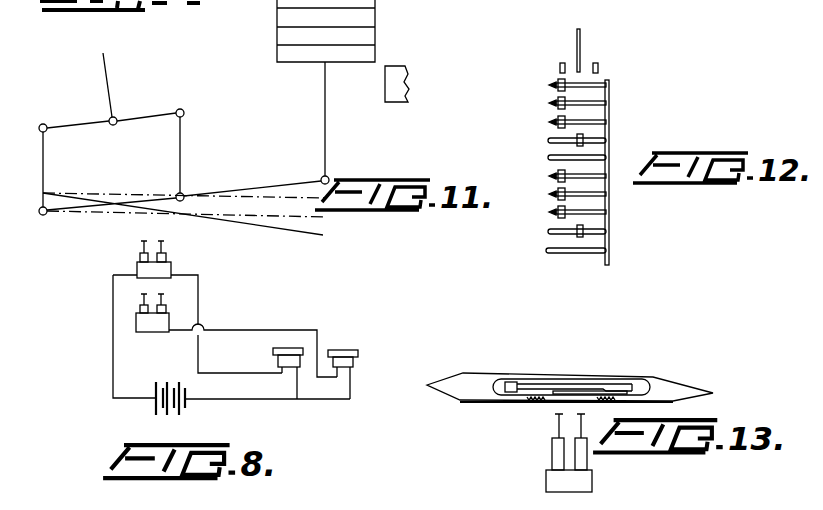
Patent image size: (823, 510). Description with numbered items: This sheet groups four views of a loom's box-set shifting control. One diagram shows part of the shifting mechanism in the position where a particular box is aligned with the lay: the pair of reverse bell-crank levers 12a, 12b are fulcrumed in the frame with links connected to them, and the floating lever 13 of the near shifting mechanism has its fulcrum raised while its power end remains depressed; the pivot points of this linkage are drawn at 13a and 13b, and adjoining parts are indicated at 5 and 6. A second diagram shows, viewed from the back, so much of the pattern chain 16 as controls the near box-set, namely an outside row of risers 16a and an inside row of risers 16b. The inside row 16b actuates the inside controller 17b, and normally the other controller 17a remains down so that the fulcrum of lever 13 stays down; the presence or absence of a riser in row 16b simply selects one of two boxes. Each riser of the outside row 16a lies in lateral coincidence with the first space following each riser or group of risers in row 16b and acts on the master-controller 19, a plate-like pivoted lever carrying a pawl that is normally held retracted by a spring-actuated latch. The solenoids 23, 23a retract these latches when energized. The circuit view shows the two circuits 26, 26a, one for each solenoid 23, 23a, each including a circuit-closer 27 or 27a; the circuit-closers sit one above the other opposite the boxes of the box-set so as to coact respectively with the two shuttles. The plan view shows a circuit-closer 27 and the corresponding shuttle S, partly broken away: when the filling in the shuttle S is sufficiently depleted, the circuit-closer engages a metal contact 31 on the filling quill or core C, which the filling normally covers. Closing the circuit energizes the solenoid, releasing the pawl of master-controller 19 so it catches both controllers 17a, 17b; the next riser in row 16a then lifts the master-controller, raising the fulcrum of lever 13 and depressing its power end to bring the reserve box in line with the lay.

In FIG. 11, the record sheet 5 is at (398, 71).
In FIG. 11, the register box with divisions a, b, c, d 6 is at (276, 23).
In FIG. 11, the reverse bell-crank lever 12a is at (139, 116).
In FIG. 11, the reverse bell-crank lever 12b is at (88, 122).
In FIG. 11, the floating lever 13 is at (270, 185).
In FIG. 11, the pivot 13a is at (182, 195).
In FIG. 11, the pivot 13b is at (40, 214).
In FIG. 12, the pattern chain 16 is at (609, 212).
In FIG. 12, the outside row of risers 16a is at (609, 140).
In FIG. 12, the inside row of risers 16b is at (556, 174).
In FIG. 12, the controller 17a is at (600, 69).
In FIG. 12, the inside controller 17b is at (557, 69).
In FIG. 12, the master-controller 19 is at (581, 38).
In FIG. 8, the solenoid 23 is at (354, 360).
In FIG. 8, the solenoid 23a is at (298, 348).
In FIG. 8, the circuit 26 is at (235, 372).
In FIG. 8, the circuit 26a is at (258, 329).
In FIG. 8, the circuit-closer 27 is at (168, 320).
In FIG. 13, the circuit-closer 27 is at (593, 483).
In FIG. 8, the circuit-closer 27a is at (160, 270).
In FIG. 13, the metal contact 31 is at (567, 385).
In FIG. 13, the filling quill or core C is at (620, 389).
In FIG. 13, the shuttle S is at (663, 380).